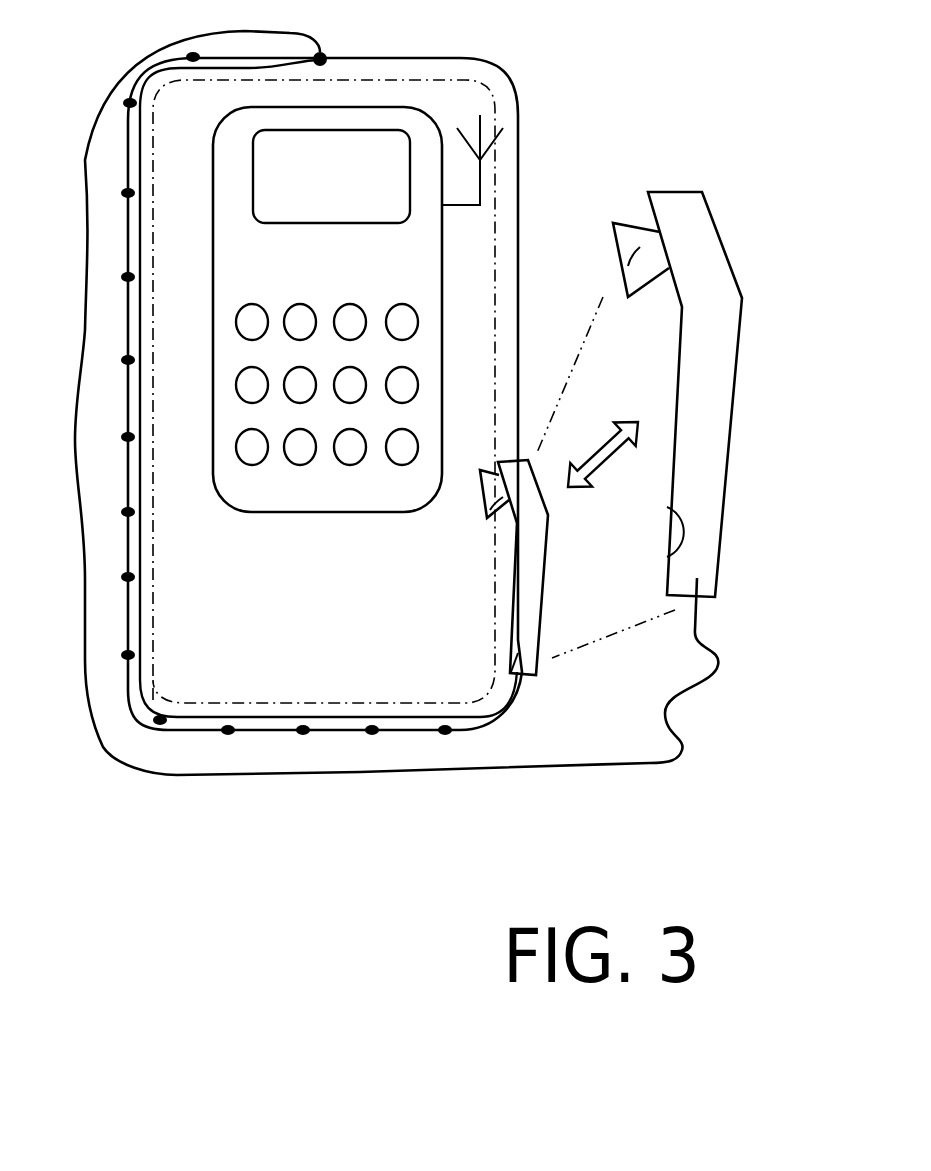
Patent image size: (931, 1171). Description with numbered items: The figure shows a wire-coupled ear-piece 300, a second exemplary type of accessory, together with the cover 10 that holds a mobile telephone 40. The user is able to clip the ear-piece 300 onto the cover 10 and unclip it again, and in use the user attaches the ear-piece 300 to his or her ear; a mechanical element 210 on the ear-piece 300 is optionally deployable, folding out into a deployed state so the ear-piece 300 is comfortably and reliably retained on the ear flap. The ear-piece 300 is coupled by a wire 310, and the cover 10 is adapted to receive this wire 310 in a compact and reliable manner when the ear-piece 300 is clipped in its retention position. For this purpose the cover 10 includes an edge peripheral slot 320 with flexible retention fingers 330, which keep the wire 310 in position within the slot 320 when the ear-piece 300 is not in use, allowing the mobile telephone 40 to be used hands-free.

The cover 10 is at (243, 664).
The mobile telephone 40 is at (303, 269).
The mechanical element 210 is at (623, 267).
The wire-coupled ear-piece 300 is at (697, 253).
The wire 310 is at (677, 717).
The edge peripheral slot 320 is at (398, 65).
The flexible retention fingers 330 is at (505, 705).